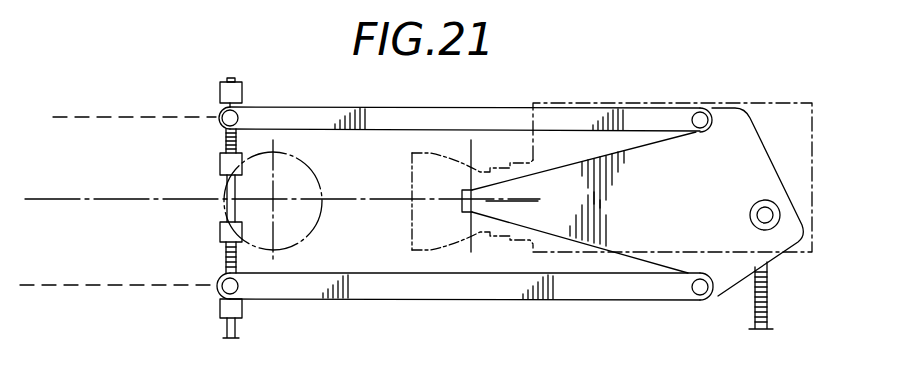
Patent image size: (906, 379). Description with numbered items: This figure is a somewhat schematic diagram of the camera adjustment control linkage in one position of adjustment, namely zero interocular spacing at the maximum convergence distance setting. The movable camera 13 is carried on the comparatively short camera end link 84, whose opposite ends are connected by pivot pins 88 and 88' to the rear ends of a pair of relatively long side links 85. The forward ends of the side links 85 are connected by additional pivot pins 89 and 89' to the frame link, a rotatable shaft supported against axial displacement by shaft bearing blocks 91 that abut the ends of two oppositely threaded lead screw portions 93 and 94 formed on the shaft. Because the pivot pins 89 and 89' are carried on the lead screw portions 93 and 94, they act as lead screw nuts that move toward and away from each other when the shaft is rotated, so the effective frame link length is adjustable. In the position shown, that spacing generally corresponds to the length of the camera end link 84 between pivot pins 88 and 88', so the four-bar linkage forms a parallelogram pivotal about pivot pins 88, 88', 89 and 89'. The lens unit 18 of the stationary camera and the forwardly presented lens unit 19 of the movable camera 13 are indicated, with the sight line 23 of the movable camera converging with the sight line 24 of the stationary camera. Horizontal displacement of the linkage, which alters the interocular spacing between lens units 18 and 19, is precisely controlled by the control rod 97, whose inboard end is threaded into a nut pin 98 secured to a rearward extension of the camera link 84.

The movable camera 13 is at (773, 102).
The lens unit 18 is at (316, 175).
The lens unit 19 is at (410, 240).
The sight line 23 is at (282, 179).
The sight line 24 is at (100, 198).
The camera end link 84 is at (560, 180).
The side links 85 is at (421, 295).
The pivot pin 88 is at (697, 307).
The pivot pin 88' is at (713, 100).
The pivot pin 89 is at (201, 299).
The pivot pin 89' is at (200, 104).
The shaft bearing blocks 91 is at (242, 94).
The lead screw portion 93 is at (224, 252).
The lead screw portion 94 is at (224, 140).
The control rod 97 is at (770, 304).
The nut pin 98 is at (757, 203).